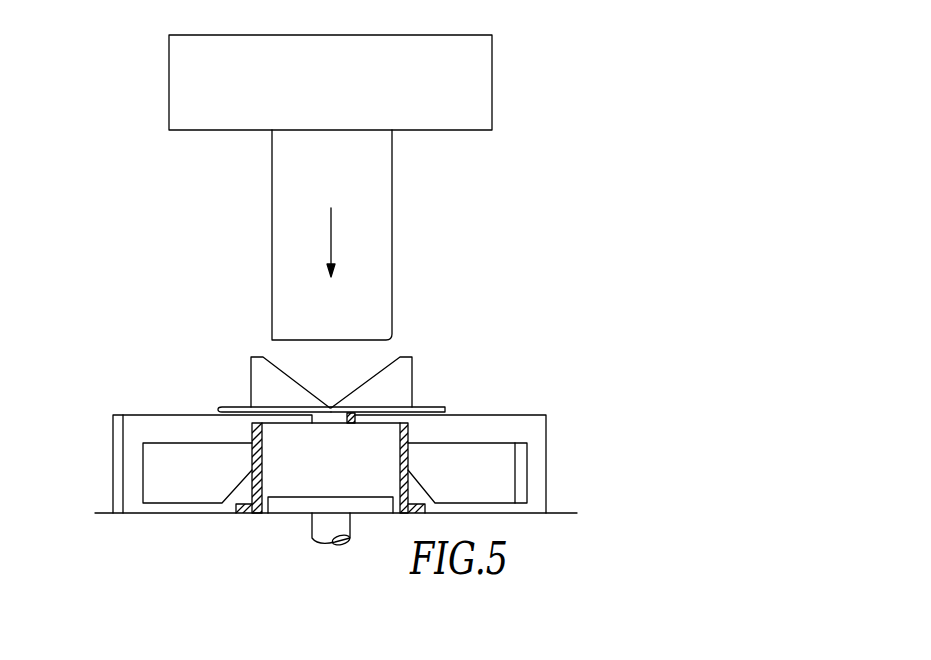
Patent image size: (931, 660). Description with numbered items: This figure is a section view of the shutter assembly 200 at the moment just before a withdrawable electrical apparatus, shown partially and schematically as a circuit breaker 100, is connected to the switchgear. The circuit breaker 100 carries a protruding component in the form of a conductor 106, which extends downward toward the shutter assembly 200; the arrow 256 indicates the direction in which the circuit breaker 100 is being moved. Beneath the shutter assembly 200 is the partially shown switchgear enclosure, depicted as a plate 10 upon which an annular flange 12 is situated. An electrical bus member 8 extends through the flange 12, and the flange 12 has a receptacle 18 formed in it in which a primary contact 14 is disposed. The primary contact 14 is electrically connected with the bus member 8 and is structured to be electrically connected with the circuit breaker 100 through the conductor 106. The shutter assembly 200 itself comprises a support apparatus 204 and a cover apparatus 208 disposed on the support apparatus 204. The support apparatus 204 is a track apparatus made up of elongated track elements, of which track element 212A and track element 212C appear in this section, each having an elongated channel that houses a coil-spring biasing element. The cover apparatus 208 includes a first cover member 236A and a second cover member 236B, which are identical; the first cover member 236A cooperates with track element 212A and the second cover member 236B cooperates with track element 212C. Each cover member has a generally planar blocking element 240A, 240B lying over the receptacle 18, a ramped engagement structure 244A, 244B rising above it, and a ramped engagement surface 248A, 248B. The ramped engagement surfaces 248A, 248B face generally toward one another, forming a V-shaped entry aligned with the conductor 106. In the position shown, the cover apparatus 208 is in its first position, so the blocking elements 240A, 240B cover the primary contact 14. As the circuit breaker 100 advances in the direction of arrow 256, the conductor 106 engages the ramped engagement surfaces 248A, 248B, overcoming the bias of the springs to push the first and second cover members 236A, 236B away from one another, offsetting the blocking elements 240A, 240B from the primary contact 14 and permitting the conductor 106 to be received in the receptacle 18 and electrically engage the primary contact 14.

The circuit breaker 100 is at (464, 144).
The conductor 106 is at (378, 348).
The arrow 256 is at (332, 232).
The shutter assembly 200 is at (379, 350).
The cover apparatus 208 is at (336, 348).
The first cover member 236A is at (412, 357).
The second cover member 236B is at (240, 348).
The ramped engagement structure 244A is at (384, 357).
The ramped engagement structure 244B is at (276, 348).
The ramped engagement surface 248A is at (348, 393).
The ramped engagement surface 248B is at (282, 368).
The blocking element 240A is at (437, 408).
The blocking element 240B is at (220, 407).
The support apparatus 204 is at (343, 447).
The track element 212A is at (547, 423).
The track element 212C is at (113, 421).
The receptacle 18 is at (348, 437).
The annular flange 12 is at (408, 452).
The primary contact 14 is at (313, 497).
The plate 10 is at (560, 513).
The electrical bus member 8 is at (312, 525).